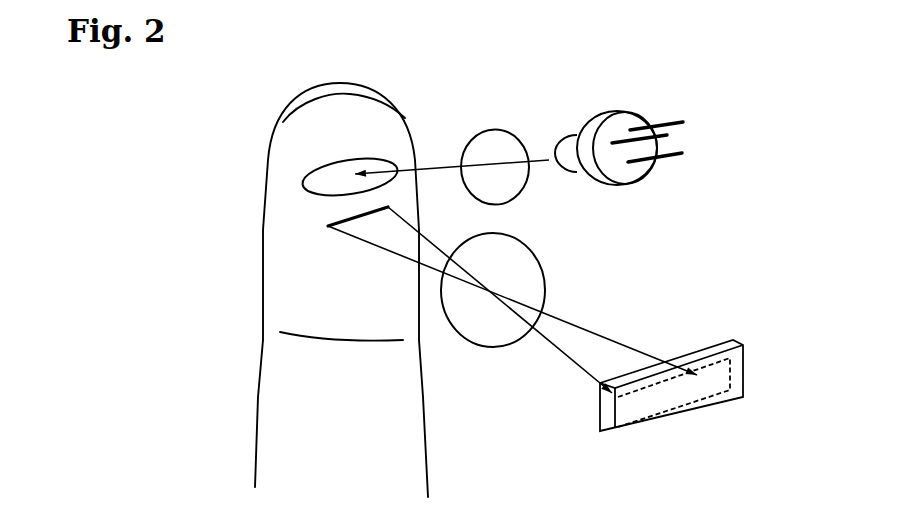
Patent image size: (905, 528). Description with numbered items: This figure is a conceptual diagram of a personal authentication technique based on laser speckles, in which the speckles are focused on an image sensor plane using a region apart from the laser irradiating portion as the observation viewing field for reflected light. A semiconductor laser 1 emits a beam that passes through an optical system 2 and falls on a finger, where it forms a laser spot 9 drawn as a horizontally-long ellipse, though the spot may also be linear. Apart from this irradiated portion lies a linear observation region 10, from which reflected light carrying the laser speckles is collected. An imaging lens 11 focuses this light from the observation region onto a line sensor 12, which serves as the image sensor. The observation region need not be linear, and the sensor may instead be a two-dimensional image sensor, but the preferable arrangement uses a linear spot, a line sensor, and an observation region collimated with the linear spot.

The semiconductor laser 1 is at (623, 117).
The optical system 2 is at (502, 132).
The laser spot 9 is at (338, 177).
The linear observation region 10 is at (388, 207).
The imaging lens 11 is at (525, 277).
The line sensor 12 is at (705, 372).